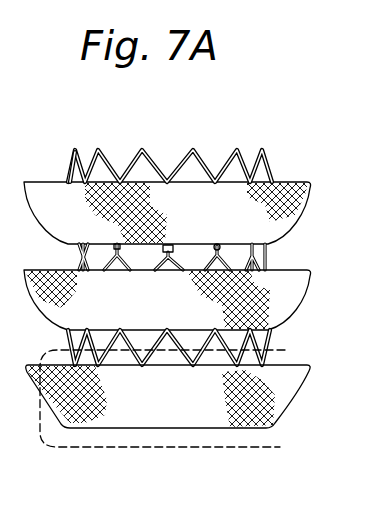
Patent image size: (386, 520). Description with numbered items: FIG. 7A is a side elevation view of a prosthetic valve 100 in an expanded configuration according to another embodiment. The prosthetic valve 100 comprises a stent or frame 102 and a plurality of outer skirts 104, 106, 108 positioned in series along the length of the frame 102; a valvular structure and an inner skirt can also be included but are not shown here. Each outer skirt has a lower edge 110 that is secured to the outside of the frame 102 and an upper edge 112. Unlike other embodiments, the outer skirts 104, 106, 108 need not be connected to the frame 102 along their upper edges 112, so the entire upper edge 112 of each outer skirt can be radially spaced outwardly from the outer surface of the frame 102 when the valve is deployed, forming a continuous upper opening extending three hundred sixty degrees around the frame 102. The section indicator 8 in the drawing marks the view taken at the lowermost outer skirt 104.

The prosthetic valve 100 is at (178, 146).
The stent or frame 102 is at (263, 168).
The outer skirt 104 is at (270, 375).
The outer skirt 106 is at (302, 296).
The outer skirt 108 is at (303, 205).
The lower edge 110 is at (215, 243).
The upper edge 112 is at (86, 184).
The section indicator 8 is at (263, 348).